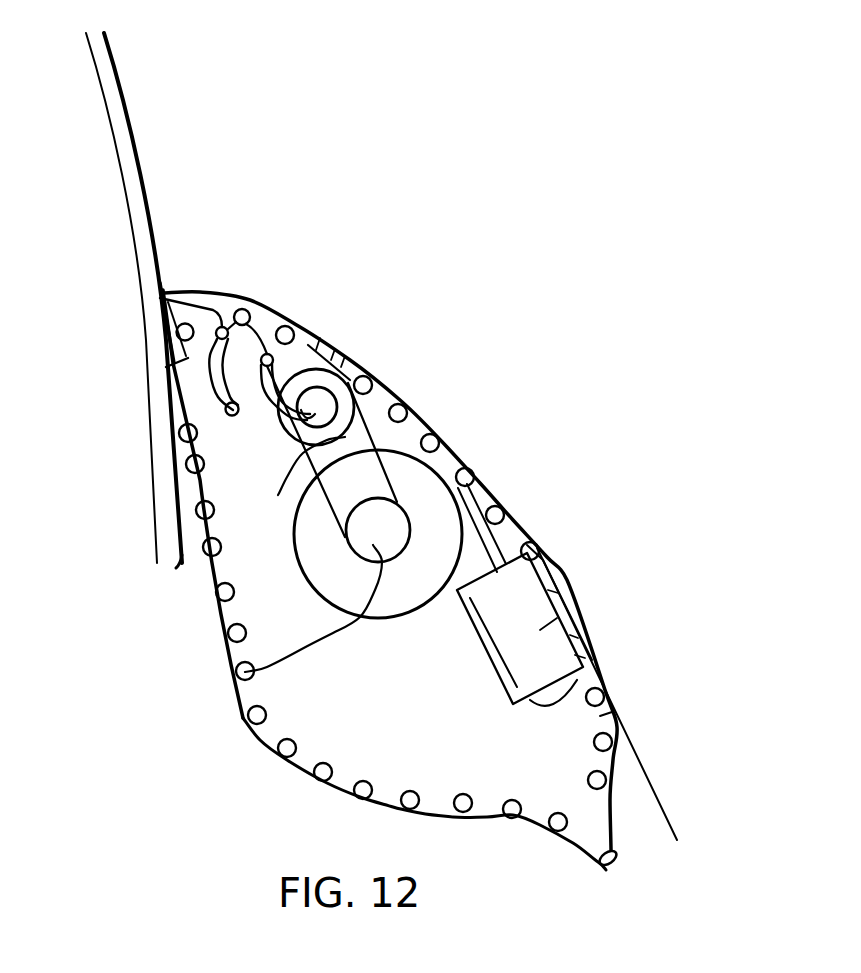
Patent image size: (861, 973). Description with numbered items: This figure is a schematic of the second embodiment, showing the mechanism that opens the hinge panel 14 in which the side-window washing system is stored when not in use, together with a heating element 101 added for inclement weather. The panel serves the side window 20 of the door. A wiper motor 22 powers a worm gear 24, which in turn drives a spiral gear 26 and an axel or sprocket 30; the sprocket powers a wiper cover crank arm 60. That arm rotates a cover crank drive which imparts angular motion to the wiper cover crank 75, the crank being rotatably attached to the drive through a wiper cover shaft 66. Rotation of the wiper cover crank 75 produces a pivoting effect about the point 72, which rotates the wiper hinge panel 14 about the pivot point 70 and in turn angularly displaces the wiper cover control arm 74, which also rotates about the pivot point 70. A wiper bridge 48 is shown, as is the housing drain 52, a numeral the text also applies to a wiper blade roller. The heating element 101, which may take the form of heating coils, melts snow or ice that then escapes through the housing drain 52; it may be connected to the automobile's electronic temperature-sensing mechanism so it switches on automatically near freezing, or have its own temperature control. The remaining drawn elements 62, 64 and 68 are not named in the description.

The hinge panel 14 is at (290, 327).
The side window 20 is at (124, 87).
The wiper motor 22 is at (583, 610).
The worm gear 24 is at (460, 596).
The spiral gear 26 is at (320, 568).
The axel or sprocket 30 is at (243, 718).
The wiper bridge 48 is at (167, 355).
The housing drain 52 is at (186, 326).
The wiper cover crank arm 60 is at (370, 420).
The pin 62 is at (616, 862).
The flange 64 is at (600, 717).
The wiper cover shaft 66 is at (278, 403).
The pivot 68 is at (230, 412).
The pivot point 70 is at (228, 325).
The pivot point 72 is at (318, 330).
The wiper cover control arm 74 is at (218, 383).
The wiper cover crank 75 is at (182, 545).
The heating element 101 is at (205, 511).